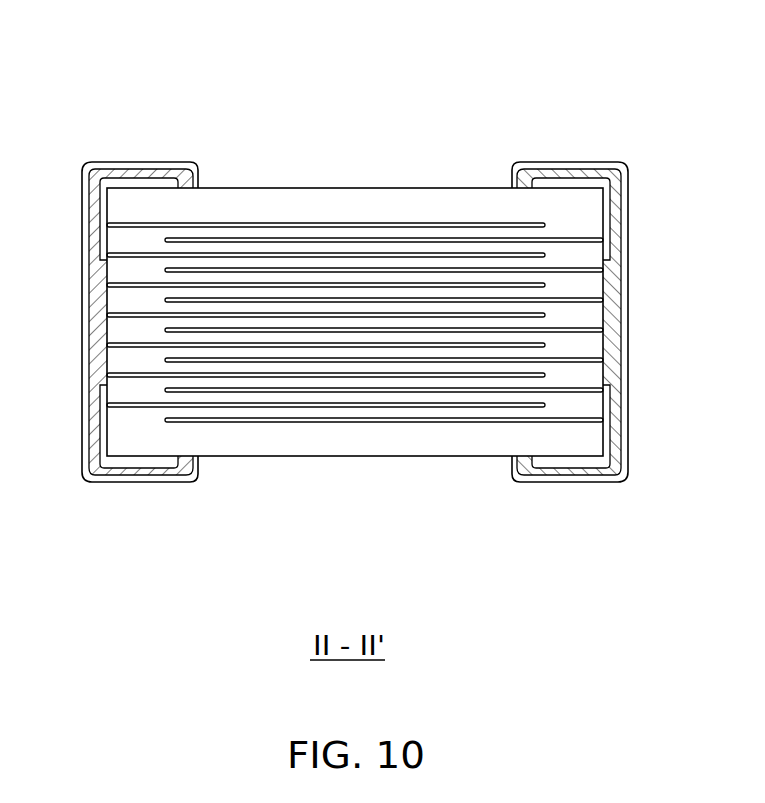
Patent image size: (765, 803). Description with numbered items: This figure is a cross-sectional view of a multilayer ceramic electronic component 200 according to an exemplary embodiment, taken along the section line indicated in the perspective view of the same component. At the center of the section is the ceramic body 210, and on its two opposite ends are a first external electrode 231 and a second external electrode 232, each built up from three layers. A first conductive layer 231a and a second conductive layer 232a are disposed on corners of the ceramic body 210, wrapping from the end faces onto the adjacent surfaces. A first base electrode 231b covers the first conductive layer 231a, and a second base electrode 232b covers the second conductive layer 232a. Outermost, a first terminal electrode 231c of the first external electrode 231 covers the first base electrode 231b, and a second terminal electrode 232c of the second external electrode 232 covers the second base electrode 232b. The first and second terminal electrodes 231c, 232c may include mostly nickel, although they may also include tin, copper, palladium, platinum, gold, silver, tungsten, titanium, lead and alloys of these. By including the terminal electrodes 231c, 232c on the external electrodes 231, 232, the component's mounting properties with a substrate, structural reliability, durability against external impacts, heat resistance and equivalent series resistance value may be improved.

The multilayer ceramic electronic component 200 is at (374, 35).
The ceramic body 210 is at (357, 457).
The first external electrode 231 is at (223, 108).
The first conductive layer 231a is at (86, 218).
The first base electrode 231b is at (137, 172).
The first terminal electrode 231c is at (170, 164).
The second external electrode 232 is at (680, 108).
The second conductive layer 232a is at (545, 163).
The second base electrode 232b is at (575, 163).
The second terminal electrode 232c is at (633, 192).